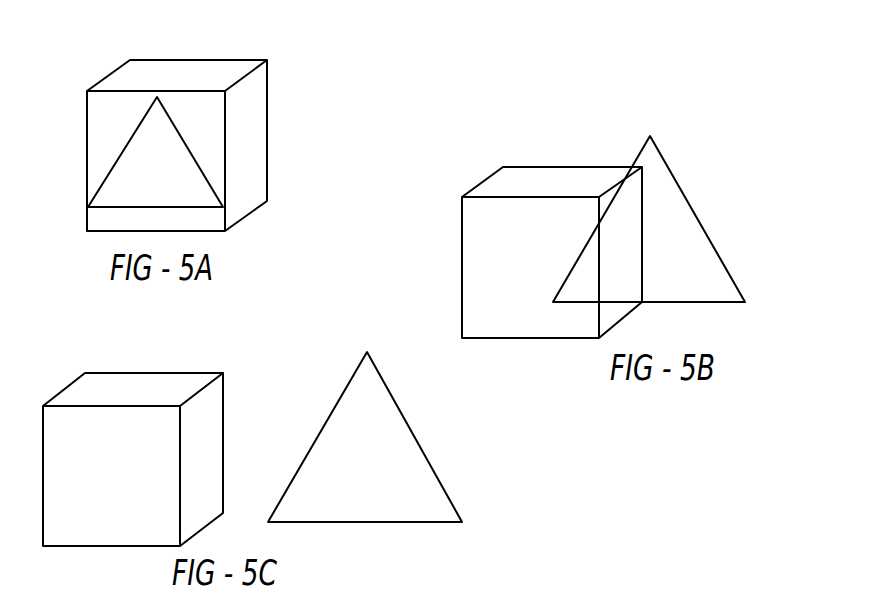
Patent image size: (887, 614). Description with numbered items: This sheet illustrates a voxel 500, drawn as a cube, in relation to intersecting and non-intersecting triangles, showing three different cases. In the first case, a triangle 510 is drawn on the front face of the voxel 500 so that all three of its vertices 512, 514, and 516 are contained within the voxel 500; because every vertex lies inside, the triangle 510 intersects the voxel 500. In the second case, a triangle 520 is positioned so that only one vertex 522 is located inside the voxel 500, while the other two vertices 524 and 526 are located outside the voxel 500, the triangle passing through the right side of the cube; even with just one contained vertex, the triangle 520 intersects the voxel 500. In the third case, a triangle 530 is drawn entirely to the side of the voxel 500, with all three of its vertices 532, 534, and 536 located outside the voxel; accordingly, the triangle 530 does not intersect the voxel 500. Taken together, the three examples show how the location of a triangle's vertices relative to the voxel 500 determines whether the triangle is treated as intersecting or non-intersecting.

In FIG. 5A, the voxel 500 is at (113, 72).
In FIG. 5B, the voxel 500 is at (493, 170).
In FIG. 5C, the voxel 500 is at (177, 372).
In FIG. 5A, the triangle 510 is at (167, 183).
In FIG. 5A, the vertex 512 is at (157, 97).
In FIG. 5A, the vertex 514 is at (90, 207).
In FIG. 5A, the vertex 516 is at (223, 207).
In FIG. 5B, the triangle 520 is at (678, 259).
In FIG. 5B, the vertex 522 is at (553, 302).
In FIG. 5B, the vertex 524 is at (650, 136).
In FIG. 5B, the vertex 526 is at (745, 302).
In FIG. 5C, the triangle 530 is at (380, 477).
In FIG. 5C, the vertex 532 is at (268, 522).
In FIG. 5C, the vertex 534 is at (367, 352).
In FIG. 5C, the vertex 536 is at (462, 522).